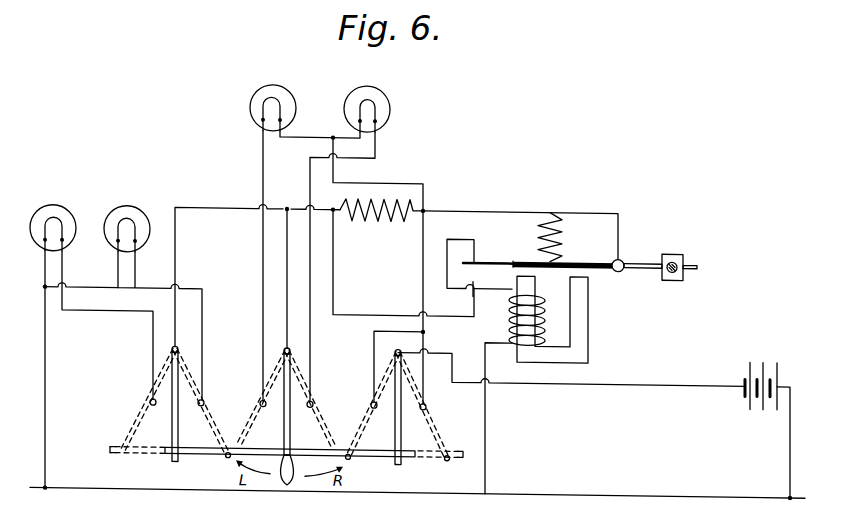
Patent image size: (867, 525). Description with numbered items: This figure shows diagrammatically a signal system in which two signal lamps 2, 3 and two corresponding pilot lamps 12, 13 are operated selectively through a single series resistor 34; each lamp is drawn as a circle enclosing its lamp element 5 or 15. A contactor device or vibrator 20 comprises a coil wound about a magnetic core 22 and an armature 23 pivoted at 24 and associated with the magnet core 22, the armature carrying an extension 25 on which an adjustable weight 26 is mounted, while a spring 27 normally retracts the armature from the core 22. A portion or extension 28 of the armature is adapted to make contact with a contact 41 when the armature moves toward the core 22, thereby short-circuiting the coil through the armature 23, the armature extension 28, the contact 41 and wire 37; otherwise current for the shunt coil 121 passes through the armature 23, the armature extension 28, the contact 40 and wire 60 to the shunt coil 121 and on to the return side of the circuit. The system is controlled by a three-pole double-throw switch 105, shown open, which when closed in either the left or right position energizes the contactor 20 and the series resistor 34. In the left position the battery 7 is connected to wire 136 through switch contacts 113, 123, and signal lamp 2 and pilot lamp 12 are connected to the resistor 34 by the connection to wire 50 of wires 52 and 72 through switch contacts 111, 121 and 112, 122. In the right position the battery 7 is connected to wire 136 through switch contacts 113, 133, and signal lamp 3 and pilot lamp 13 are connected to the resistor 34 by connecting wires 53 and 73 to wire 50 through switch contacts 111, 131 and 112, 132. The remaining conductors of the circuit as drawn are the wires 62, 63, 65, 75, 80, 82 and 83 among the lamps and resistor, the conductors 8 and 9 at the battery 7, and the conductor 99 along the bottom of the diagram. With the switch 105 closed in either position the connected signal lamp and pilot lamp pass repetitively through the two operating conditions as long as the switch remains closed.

The signal lamp 2 is at (53, 204).
The signal lamp 3 is at (127, 204).
The lamp filament 5 is at (46, 211).
The battery 7 is at (763, 360).
The conductor 8 is at (516, 377).
The conductor 9 is at (787, 444).
The pilot lamp 12 is at (274, 81).
The pilot lamp 13 is at (364, 84).
The lamp filament 15 is at (257, 89).
The contactor device 20 is at (549, 386).
The magnetic core 22 is at (590, 332).
The armature 23 is at (577, 253).
The pivot 24 is at (622, 252).
The extension 25 is at (699, 257).
The adjustable weight 26 is at (676, 245).
The spring 27 is at (562, 212).
The armature extension 28 is at (500, 256).
The series resistor 34 is at (378, 203).
The wire 37 is at (363, 309).
The contact 40 is at (471, 252).
The contact 41 is at (473, 283).
The wire 50 is at (182, 205).
The wire 52 is at (107, 325).
The wire 53 is at (94, 309).
The wire 60 is at (471, 233).
The conductor 62 is at (36, 269).
The conductor 63 is at (102, 285).
The conductor 65 is at (46, 386).
The wire 72 is at (263, 287).
The wire 73 is at (313, 320).
The conductor 75 is at (287, 253).
The conductor 80 is at (426, 178).
The conductor 82 is at (313, 132).
The junction 83 is at (330, 126).
The ground conductor 99 is at (128, 488).
The three-pole double-throw switch 105 is at (216, 460).
The switch contact 111 is at (172, 346).
The switch contact 112 is at (284, 346).
The switch contact 113 is at (395, 346).
The shunt coil 121 is at (510, 319).
The switch contact 122 is at (260, 400).
The switch contact 123 is at (371, 400).
The switch contact 131 is at (200, 404).
The switch contact 132 is at (312, 397).
The switch contact 133 is at (427, 401).
The wire 136 is at (426, 216).